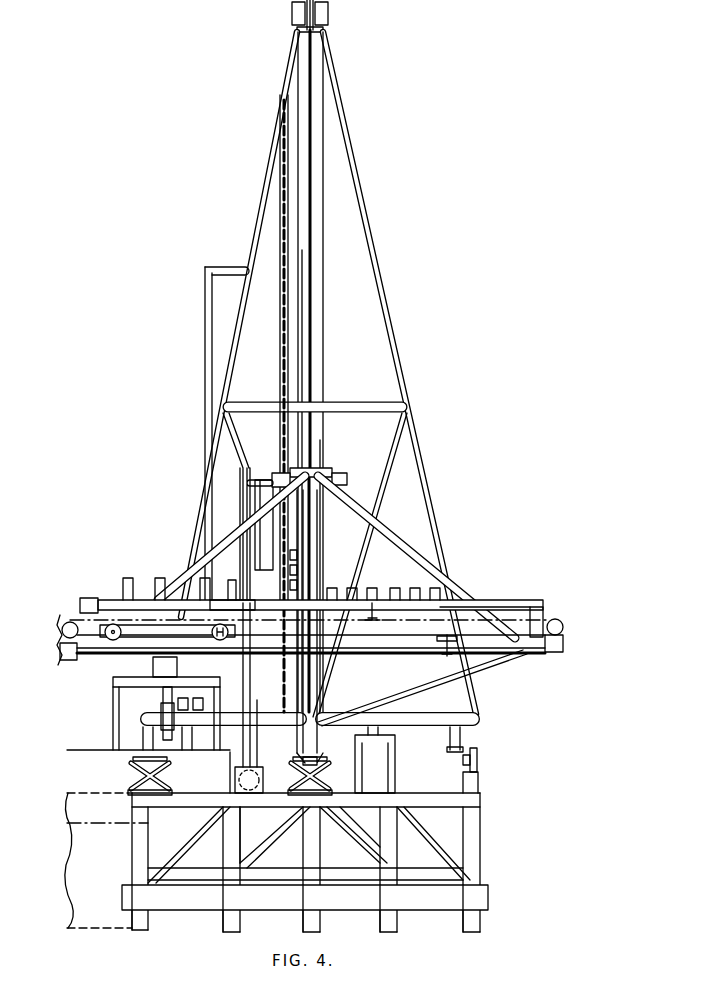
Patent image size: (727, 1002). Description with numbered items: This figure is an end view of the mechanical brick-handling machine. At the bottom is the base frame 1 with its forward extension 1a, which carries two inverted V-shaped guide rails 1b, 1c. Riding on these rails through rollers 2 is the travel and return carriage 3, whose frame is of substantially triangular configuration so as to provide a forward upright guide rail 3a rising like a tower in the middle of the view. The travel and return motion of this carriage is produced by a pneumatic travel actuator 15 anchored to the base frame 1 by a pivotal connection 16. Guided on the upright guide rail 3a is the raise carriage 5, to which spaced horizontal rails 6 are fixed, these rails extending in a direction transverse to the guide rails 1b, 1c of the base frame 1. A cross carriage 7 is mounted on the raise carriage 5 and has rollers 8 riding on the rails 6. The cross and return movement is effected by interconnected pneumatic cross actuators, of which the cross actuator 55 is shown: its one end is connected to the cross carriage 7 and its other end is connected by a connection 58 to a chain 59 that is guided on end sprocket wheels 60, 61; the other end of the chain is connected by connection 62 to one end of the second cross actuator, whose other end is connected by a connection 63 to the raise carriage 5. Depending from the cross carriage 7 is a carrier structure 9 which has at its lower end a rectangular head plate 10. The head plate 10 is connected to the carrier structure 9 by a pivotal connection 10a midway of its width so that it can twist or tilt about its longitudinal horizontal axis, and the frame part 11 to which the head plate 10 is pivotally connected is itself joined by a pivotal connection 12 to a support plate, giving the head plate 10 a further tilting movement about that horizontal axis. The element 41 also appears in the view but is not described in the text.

The base frame 1 is at (475, 857).
The forward extension 1a is at (388, 824).
The inverted V-shaped guide rail 1b is at (292, 800).
The inverted V-shaped guide rail 1c is at (480, 792).
The rollers 2 is at (130, 765).
The travel and return carriage 3 is at (362, 215).
The forward upright guide rail 3a is at (303, 215).
The raise carriage 5 is at (350, 492).
The horizontal rails 6 is at (520, 648).
The cross carriage 7 is at (108, 600).
The roller 8 is at (112, 641).
The carrier structure 9 is at (90, 722).
The head plate 10 is at (68, 752).
The pivotal connection 10a is at (115, 748).
The frame part 11 is at (172, 738).
The pivotal connection 12 is at (118, 680).
The pneumatic travel actuator 15 is at (235, 777).
The pivotal connection 16 is at (130, 792).
The guide rod 41 is at (288, 247).
The pneumatic cross actuator 55 is at (258, 603).
The connection 58 is at (376, 604).
The chain 59 is at (503, 606).
The end sprocket wheel 60 is at (70, 622).
The end sprocket wheel 61 is at (556, 620).
The connection 62 is at (444, 655).
The connection 63 is at (63, 660).